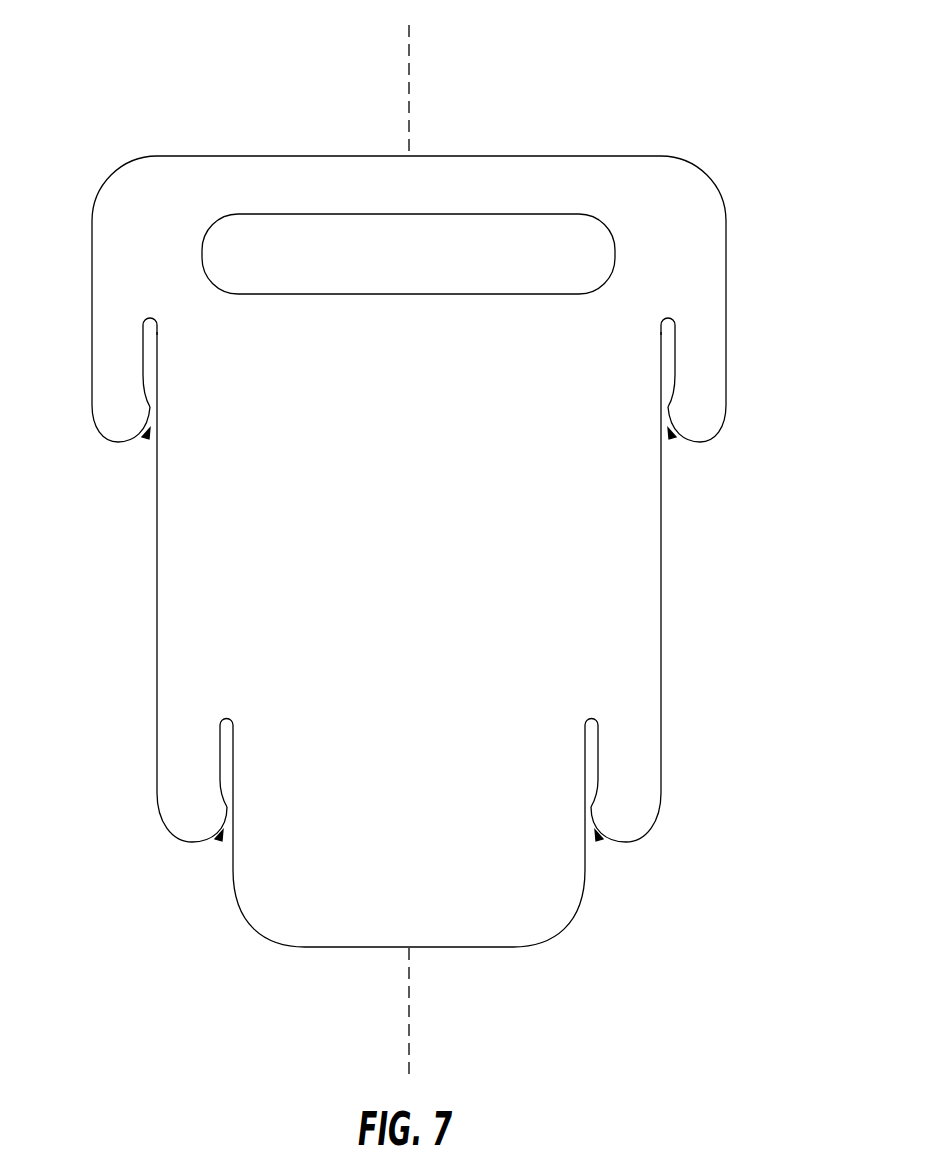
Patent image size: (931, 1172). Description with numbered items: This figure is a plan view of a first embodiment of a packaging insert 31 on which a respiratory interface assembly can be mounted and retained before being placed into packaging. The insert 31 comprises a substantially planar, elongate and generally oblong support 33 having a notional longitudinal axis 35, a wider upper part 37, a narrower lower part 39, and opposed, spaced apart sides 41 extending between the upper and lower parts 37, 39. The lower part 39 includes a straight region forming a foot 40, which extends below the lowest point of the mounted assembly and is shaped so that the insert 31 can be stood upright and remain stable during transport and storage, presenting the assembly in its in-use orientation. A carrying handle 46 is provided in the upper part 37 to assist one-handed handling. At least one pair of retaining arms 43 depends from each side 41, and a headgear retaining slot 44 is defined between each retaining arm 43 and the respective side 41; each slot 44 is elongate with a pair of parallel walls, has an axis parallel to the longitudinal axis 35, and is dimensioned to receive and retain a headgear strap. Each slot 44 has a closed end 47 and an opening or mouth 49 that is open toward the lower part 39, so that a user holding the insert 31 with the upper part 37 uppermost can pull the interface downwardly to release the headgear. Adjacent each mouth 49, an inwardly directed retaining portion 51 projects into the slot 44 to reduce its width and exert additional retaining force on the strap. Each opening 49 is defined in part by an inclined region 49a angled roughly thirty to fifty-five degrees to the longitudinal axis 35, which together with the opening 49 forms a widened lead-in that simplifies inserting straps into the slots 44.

The packaging insert 31 is at (100, 109).
The support 33 is at (422, 555).
The longitudinal axis 35 is at (410, 92).
The upper part 37 is at (700, 197).
The lower part 39 is at (522, 925).
The foot 40 is at (350, 948).
The sides 41 is at (156, 614).
The retaining arms 43 is at (108, 374).
The headgear retaining slot 44 is at (150, 348).
The carrying handle 46 is at (530, 233).
The closed end 47 is at (147, 318).
The opening or mouth 49 is at (146, 440).
The inclined region 49a is at (137, 428).
The retaining portion 51 is at (150, 408).